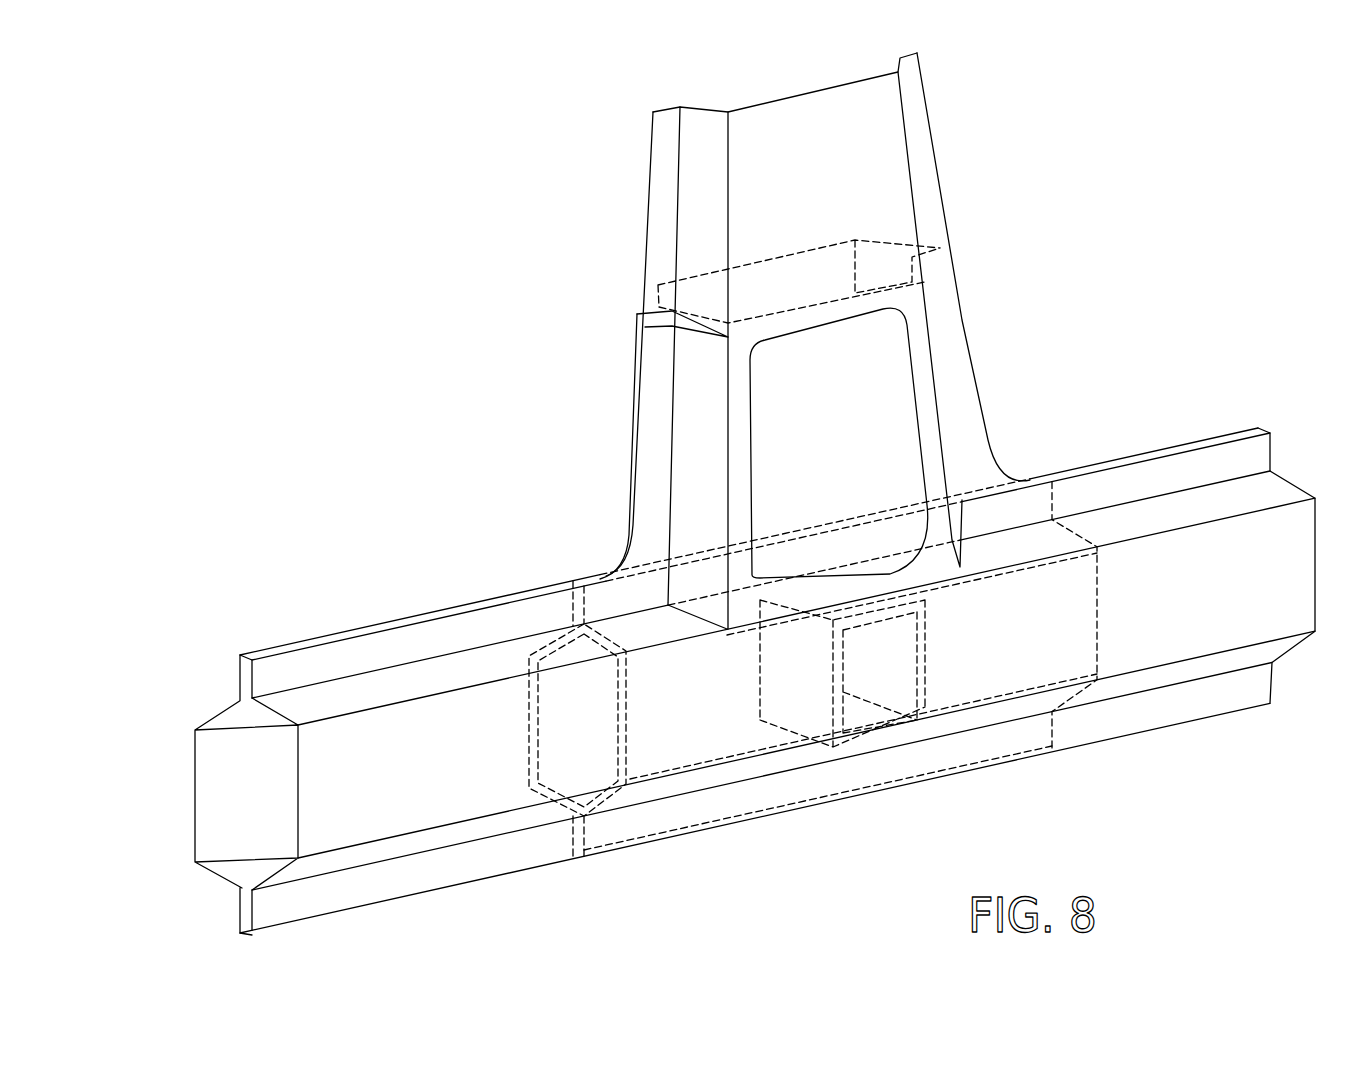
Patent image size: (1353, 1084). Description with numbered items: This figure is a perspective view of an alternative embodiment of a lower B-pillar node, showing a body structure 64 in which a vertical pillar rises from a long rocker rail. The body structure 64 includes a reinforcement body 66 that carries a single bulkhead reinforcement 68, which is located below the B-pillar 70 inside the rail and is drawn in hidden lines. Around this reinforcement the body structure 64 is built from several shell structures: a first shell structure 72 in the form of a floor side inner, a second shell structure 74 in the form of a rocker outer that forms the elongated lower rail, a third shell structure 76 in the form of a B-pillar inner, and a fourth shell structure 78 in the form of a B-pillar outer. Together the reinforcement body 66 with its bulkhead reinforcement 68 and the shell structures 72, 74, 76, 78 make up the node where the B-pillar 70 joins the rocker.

The body structure 64 is at (700, 503).
The reinforcement body 66 is at (600, 743).
The bulkhead reinforcement 68 is at (820, 702).
The B-pillar 70 is at (877, 243).
The first shell structure 72 is at (223, 814).
The second shell structure 74 is at (350, 800).
The third shell structure 76 is at (760, 288).
The fourth shell structure 78 is at (920, 382).